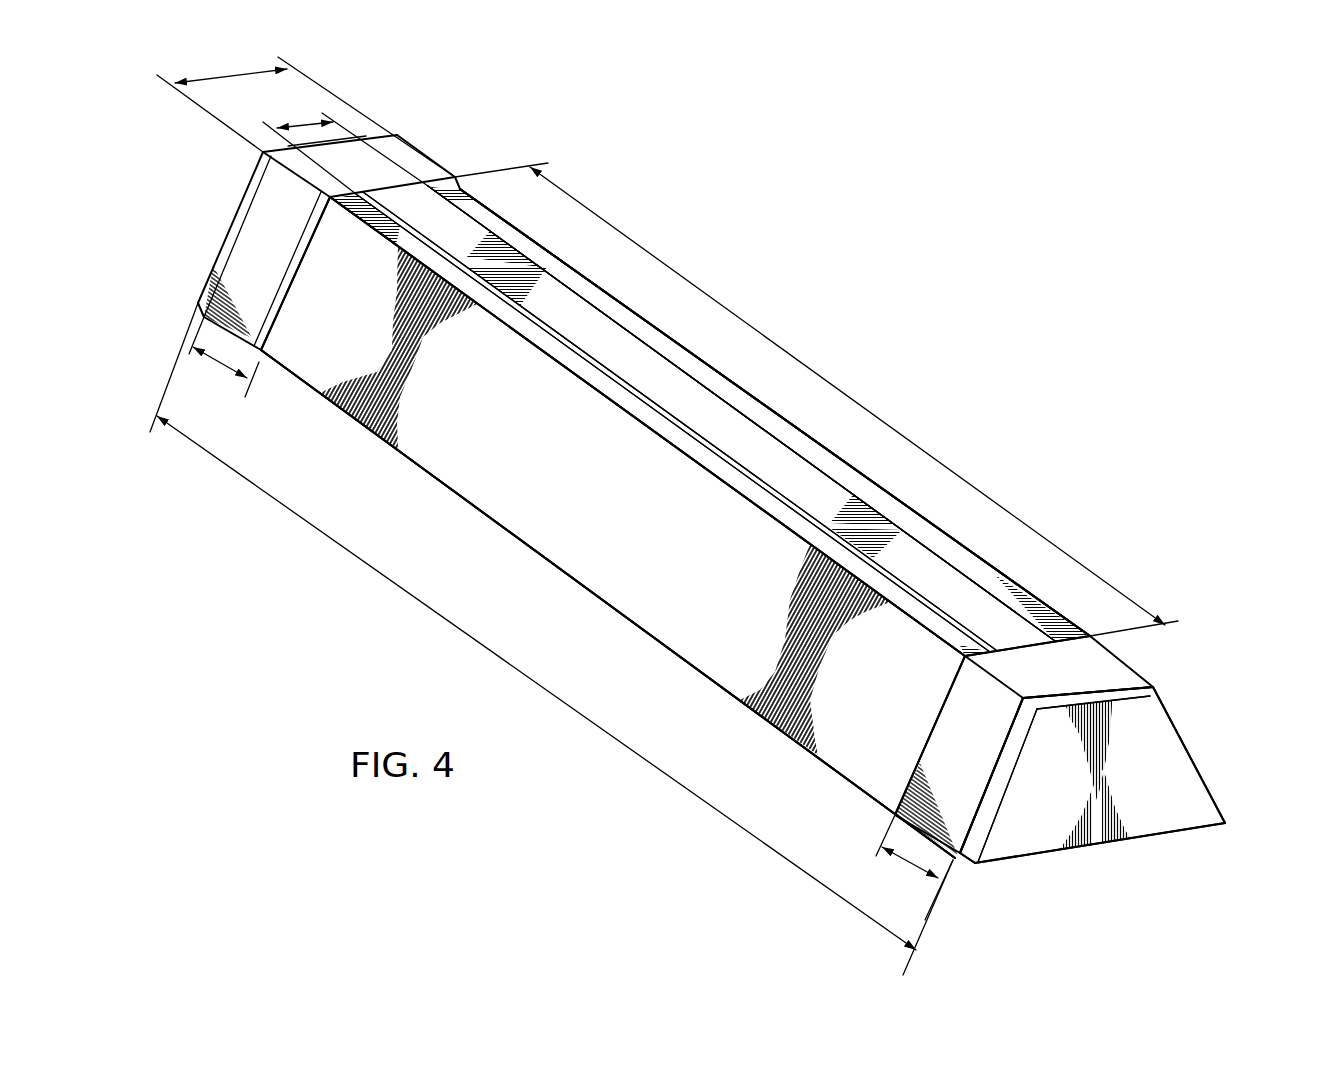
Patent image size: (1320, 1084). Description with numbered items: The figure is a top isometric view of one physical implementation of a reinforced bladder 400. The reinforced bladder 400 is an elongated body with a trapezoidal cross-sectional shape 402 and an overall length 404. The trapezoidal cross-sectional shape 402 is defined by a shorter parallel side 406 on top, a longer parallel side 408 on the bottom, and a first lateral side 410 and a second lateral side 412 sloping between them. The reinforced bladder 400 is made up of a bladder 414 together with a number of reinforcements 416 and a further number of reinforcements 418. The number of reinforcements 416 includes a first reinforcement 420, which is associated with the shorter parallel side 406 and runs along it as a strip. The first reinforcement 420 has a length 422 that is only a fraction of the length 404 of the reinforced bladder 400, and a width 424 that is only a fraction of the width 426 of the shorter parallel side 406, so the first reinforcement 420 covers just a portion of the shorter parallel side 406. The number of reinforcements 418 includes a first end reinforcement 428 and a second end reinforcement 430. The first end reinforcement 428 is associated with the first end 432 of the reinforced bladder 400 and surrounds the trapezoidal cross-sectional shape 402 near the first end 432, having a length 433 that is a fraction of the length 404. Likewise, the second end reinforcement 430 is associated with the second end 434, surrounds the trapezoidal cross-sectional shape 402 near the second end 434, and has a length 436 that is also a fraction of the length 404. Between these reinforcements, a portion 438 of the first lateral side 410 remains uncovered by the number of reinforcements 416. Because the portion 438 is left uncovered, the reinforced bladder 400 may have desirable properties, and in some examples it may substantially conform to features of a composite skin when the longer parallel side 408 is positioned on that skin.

The reinforced bladder 400 is at (801, 190).
The trapezoidal cross-sectional shape 402 is at (1140, 808).
The length 404 is at (540, 682).
The shorter parallel side 406 is at (1127, 691).
The longer parallel side 408 is at (1098, 843).
The first lateral side 410 is at (1022, 748).
The second lateral side 412 is at (1195, 757).
The bladder 414 is at (583, 549).
The number of reinforcements 416 is at (944, 396).
The number of reinforcements 418 is at (557, 138).
The first reinforcement 420 is at (790, 447).
The length 422 is at (840, 392).
The width 424 is at (308, 125).
The width 426 is at (237, 75).
The first end reinforcement 428 is at (423, 167).
The second end reinforcement 430 is at (937, 747).
The first end 432 is at (229, 230).
The length 433 is at (227, 367).
The second end 434 is at (992, 862).
The length 436 is at (910, 867).
The portion 438 is at (451, 461).